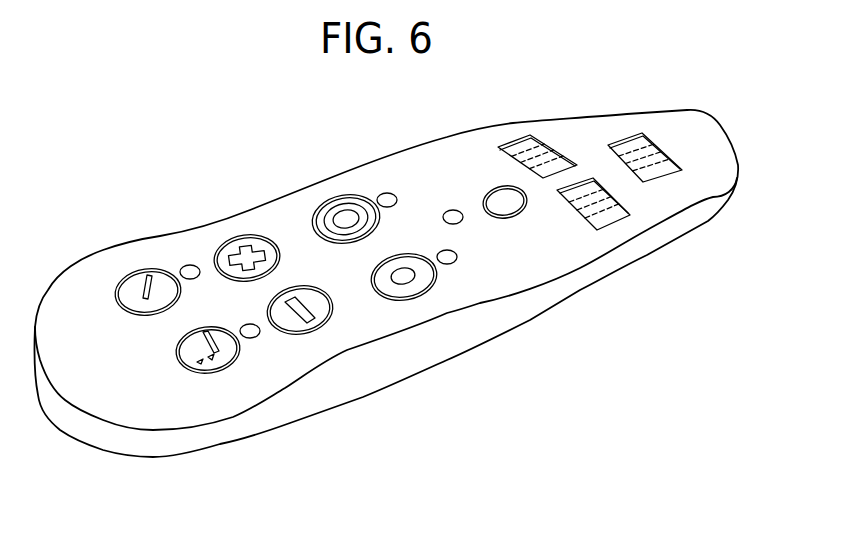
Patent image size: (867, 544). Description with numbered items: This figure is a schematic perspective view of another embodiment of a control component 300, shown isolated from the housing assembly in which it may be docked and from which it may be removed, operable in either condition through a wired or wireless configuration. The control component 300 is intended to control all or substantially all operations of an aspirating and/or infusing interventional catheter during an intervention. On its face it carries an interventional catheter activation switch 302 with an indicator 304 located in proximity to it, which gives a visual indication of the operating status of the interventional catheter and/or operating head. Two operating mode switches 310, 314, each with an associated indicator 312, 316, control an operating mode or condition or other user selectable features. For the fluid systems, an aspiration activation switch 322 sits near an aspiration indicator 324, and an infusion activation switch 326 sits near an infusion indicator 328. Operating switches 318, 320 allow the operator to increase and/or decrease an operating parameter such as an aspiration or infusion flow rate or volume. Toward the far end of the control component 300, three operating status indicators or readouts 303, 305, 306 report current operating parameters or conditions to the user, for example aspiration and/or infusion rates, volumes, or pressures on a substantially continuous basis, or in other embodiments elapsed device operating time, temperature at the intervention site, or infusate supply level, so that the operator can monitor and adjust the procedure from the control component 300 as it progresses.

The control component 300 is at (238, 108).
The interventional catheter activation switch 302 is at (507, 199).
The operating status indicator or readout 303 is at (543, 147).
The indicator 304 is at (453, 212).
The operating status indicator or readout 305 is at (623, 213).
The operating status indicator or readout 306 is at (640, 147).
The operating mode switch 310 is at (347, 218).
The indicator 312 is at (386, 198).
The operating mode switch 314 is at (405, 277).
The indicator 316 is at (452, 258).
The operating switch 318 is at (243, 255).
The operating switch 320 is at (305, 312).
The aspiration activation switch 322 is at (170, 311).
The aspiration indicator 324 is at (190, 265).
The infusion activation switch 326 is at (218, 352).
The infusion indicator 328 is at (254, 334).